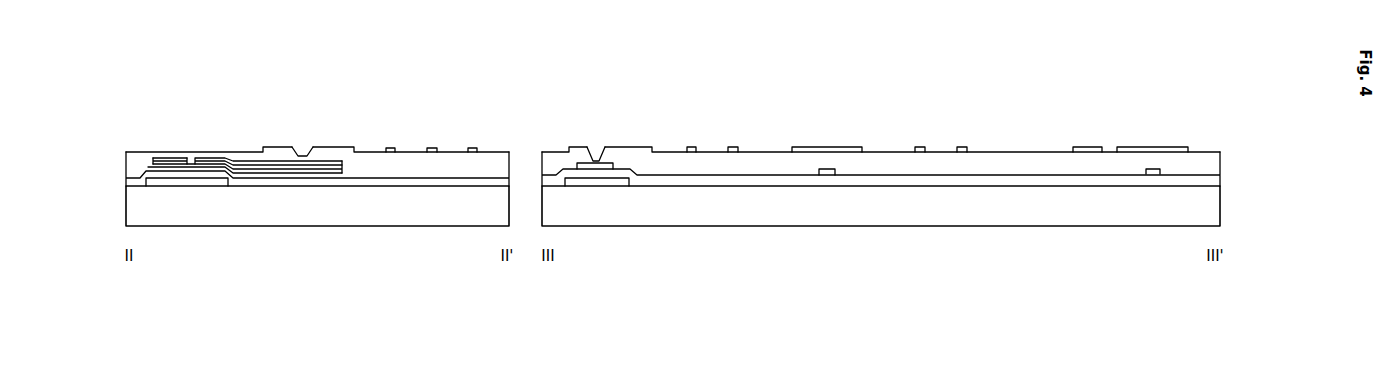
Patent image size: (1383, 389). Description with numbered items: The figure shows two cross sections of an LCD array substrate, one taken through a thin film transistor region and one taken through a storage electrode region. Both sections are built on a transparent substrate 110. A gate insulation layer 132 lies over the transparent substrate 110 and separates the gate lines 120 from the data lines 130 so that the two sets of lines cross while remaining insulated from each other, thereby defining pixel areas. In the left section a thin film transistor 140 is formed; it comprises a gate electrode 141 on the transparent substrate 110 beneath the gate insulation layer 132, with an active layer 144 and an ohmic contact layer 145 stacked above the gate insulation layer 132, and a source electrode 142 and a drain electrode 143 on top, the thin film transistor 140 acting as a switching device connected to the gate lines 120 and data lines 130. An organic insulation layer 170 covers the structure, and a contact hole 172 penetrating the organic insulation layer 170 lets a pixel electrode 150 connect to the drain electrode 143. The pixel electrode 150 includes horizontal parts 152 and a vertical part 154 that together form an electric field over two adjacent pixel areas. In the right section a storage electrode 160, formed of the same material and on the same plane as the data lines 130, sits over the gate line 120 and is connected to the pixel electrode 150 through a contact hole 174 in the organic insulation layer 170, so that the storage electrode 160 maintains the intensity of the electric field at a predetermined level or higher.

The transparent substrate 110 is at (126, 212).
The gate line 120 is at (594, 186).
The data line 130 is at (155, 152).
The gate insulation layer 132 is at (126, 178).
The thin film transistor 140 is at (244, 208).
The gate electrode 141 is at (167, 186).
The source electrode 142 is at (180, 160).
The drain electrode 143 is at (218, 162).
The active layer 144 is at (210, 168).
The ohmic contact layer 145 is at (218, 173).
The pixel electrode 150 is at (1168, 65).
The horizontal part 152 is at (350, 147).
The vertical part 154 is at (827, 147).
The storage electrode 160 is at (580, 163).
The organic insulation layer 170 is at (126, 160).
The contact hole 172 is at (303, 139).
The contact hole 174 is at (597, 138).